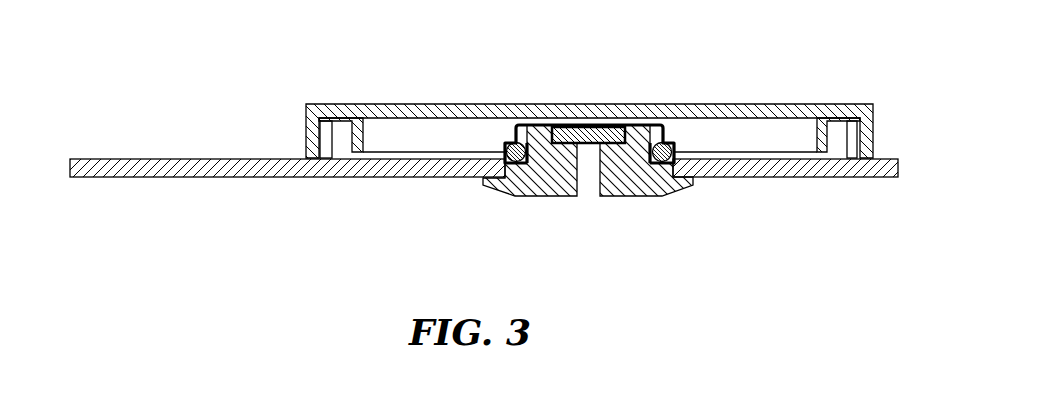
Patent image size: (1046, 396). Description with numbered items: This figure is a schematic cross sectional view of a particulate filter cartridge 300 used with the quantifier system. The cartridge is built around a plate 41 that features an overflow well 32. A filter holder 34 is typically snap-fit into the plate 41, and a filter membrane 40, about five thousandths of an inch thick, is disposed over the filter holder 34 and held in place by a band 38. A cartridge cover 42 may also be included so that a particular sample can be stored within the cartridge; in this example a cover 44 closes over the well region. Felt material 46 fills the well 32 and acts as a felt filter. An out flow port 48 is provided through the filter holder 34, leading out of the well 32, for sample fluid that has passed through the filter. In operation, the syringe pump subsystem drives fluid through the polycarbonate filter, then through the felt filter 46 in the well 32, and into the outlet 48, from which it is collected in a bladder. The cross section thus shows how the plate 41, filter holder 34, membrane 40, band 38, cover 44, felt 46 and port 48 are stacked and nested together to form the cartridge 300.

The sensor assembly 300 is at (243, 110).
The plate 41 is at (135, 158).
The cover 42 is at (418, 128).
The cartridge cover 44 is at (353, 116).
The well 32 is at (532, 127).
The felt material 46 is at (581, 128).
The filter membrane 40 is at (638, 130).
The band 38 is at (672, 148).
The filter holder 34 is at (550, 182).
The out flow port 48 is at (590, 180).